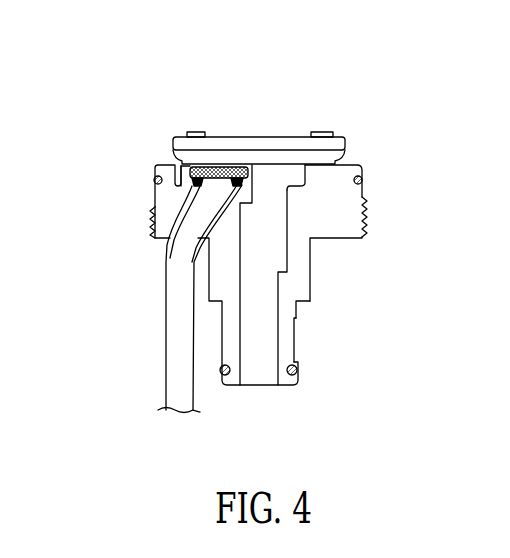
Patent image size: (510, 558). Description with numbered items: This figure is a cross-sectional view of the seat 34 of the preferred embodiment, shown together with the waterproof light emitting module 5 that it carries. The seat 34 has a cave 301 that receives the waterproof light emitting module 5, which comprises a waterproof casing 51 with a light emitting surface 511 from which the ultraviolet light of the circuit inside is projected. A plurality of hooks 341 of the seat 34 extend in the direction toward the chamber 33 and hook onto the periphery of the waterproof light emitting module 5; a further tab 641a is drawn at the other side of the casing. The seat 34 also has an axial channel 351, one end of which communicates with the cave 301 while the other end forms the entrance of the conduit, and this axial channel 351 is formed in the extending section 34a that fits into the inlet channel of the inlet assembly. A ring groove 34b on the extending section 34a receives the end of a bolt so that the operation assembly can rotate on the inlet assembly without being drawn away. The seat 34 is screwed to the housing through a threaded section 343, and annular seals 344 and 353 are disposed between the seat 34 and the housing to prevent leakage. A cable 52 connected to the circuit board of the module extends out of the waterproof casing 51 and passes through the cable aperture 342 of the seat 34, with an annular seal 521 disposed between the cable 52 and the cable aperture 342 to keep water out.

The waterproof light emitting module 5 is at (287, 109).
The waterproof casing 51 is at (184, 158).
The light emitting surface 511 is at (258, 133).
The hooks 341 is at (201, 132).
The right positioning tab 641a is at (319, 133).
The annular seal 521 is at (190, 167).
The seat 34 is at (353, 167).
The cave 301 is at (331, 174).
The threaded section 343 is at (367, 213).
The cable aperture 342 is at (156, 219).
The annular seal 344 is at (154, 179).
The extending section 34a is at (305, 290).
The ring groove 34b is at (298, 338).
The annular seal 353 is at (298, 369).
The axial channel 351 is at (259, 372).
The cable 52 is at (176, 298).
The chamber 33 is at (485, 235).